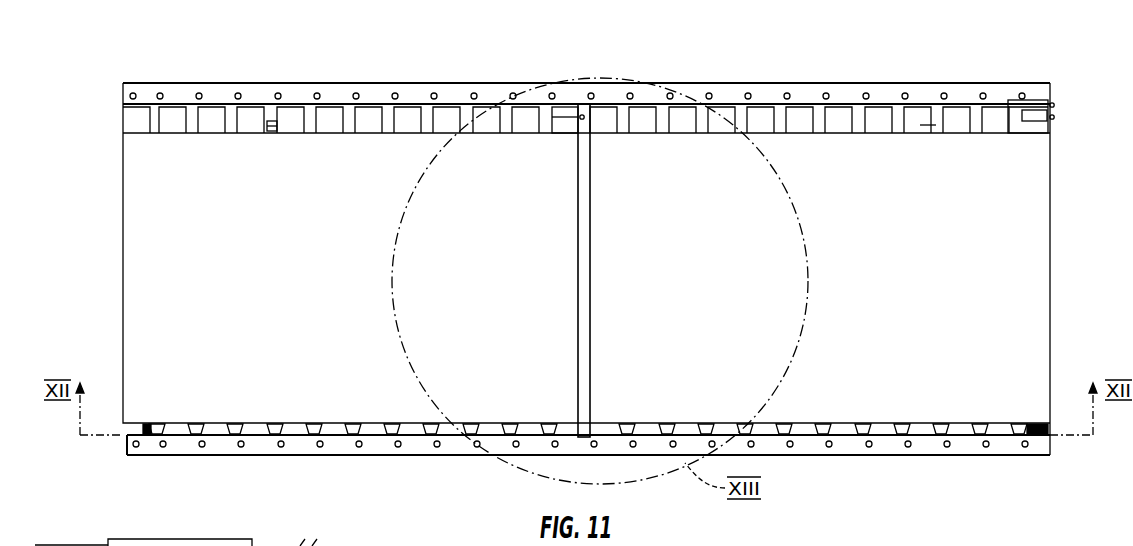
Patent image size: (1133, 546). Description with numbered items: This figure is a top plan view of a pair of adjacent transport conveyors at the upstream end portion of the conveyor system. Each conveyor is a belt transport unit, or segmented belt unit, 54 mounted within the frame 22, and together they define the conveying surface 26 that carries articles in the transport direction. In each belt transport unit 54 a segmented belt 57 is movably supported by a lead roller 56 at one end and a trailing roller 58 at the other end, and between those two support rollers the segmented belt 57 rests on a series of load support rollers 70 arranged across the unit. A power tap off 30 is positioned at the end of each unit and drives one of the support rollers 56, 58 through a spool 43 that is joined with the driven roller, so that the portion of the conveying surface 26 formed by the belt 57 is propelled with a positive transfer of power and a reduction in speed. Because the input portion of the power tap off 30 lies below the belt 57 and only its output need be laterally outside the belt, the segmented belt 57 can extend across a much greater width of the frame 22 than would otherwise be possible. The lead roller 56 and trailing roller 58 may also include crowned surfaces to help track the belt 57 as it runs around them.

The frame 22 is at (218, 88).
The conveying surface 26 is at (279, 283).
The power tap off 30 is at (569, 98).
The spool 43 is at (583, 111).
The belt transport unit 54 is at (395, 80).
The lead roller 56 is at (552, 434).
The segmented belt 57 is at (273, 132).
The trailing roller 58 is at (147, 434).
The load support roller 70 is at (452, 112).